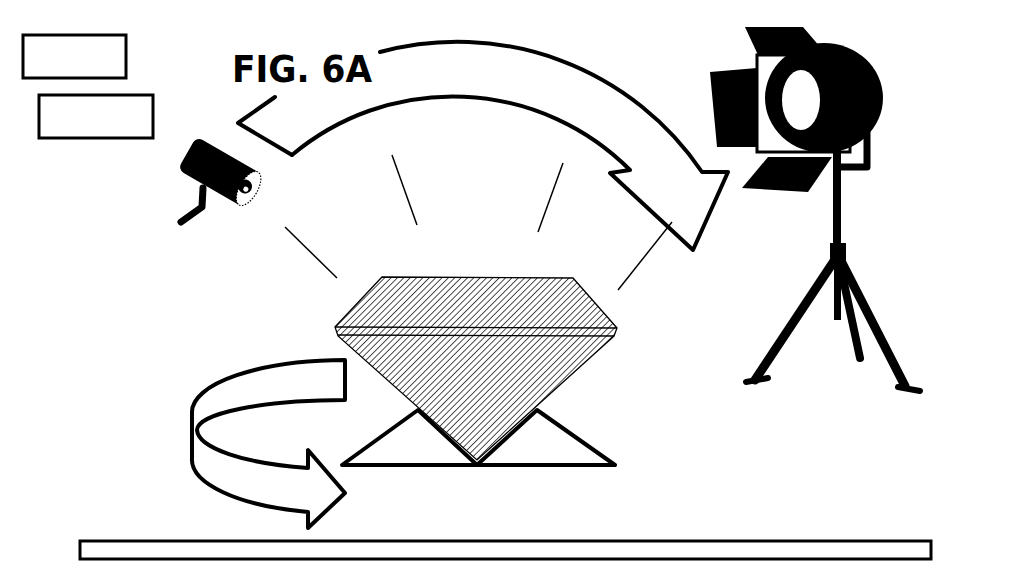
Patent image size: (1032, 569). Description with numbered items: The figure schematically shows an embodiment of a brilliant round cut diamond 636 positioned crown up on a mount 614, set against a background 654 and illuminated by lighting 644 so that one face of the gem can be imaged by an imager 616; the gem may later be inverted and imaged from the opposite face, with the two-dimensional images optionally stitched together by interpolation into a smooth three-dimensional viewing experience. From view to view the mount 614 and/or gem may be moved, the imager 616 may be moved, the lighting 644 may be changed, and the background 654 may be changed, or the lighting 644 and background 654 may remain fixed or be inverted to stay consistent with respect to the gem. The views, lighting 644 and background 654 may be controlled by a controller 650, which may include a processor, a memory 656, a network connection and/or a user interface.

The memory 656 is at (126, 56).
The controller 650 is at (153, 117).
The imager 616 is at (177, 155).
The lighting 644 is at (752, 40).
The brilliant round cut diamond 636 is at (458, 288).
The mount 614 is at (593, 447).
The background 654 is at (132, 540).